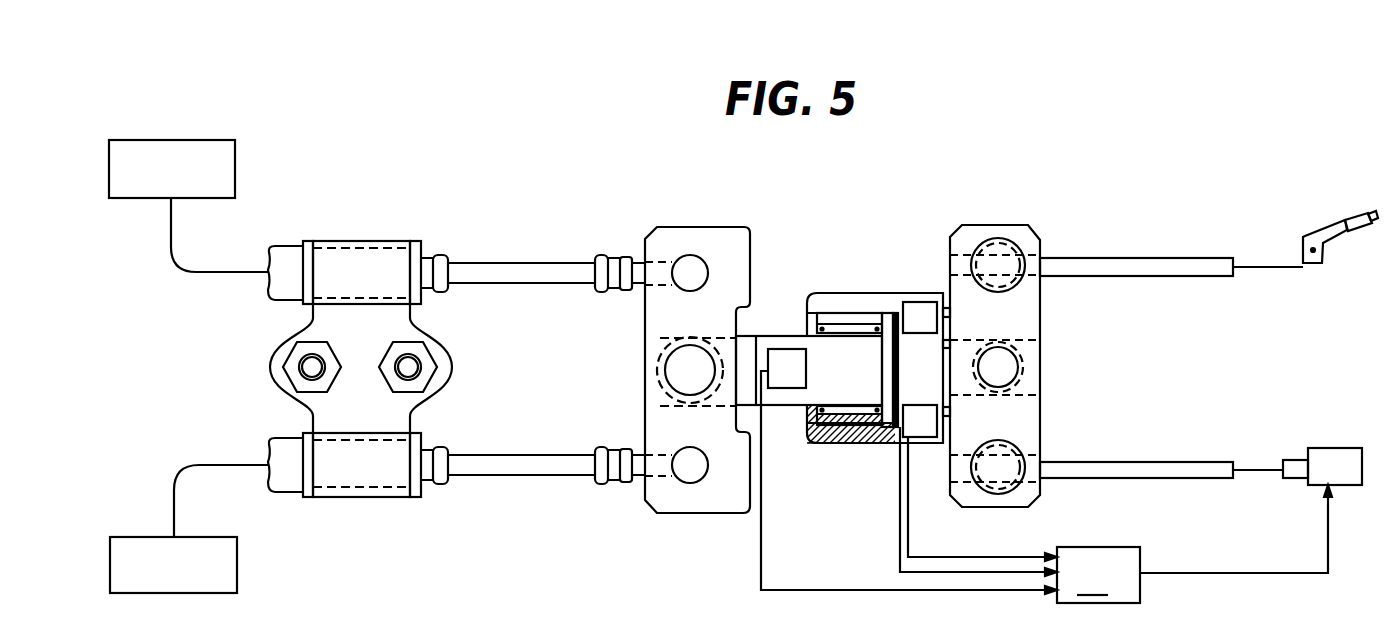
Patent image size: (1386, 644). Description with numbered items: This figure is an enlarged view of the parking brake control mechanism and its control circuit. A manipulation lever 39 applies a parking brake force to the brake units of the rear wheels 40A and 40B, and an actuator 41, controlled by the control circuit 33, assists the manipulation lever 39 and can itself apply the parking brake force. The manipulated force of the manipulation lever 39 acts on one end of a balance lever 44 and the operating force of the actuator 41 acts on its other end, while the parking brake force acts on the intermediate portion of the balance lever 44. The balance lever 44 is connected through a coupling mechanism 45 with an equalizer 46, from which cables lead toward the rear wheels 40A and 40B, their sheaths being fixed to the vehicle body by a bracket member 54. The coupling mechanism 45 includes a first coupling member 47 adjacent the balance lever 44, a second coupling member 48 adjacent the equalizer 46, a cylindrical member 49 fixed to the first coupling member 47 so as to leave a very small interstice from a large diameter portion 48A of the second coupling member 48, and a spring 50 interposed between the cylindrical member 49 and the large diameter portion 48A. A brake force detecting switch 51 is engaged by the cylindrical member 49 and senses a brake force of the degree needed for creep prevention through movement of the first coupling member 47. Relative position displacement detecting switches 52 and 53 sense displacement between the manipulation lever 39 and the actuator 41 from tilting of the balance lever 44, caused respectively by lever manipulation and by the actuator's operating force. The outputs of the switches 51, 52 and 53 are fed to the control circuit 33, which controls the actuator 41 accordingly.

The control circuit 33 is at (1020, 515).
The manipulation lever 39 is at (1322, 226).
The rear wheel 40A is at (228, 138).
The rear wheel 40B is at (222, 583).
The actuator 41 is at (1344, 490).
The balance lever 44 is at (968, 232).
The coupling mechanism 45 is at (831, 462).
The equalizer 46 is at (670, 242).
The first coupling member 47 is at (857, 293).
The second coupling member 48 is at (781, 396).
The large diameter portion 48A is at (893, 432).
The cylindrical member 49 is at (828, 312).
The spring 50 is at (828, 443).
The brake force detecting switch 51 is at (780, 358).
The relative position displacement detecting switch 52 is at (927, 445).
The relative position displacement detecting switch 53 is at (912, 310).
The bracket member 54 is at (356, 497).